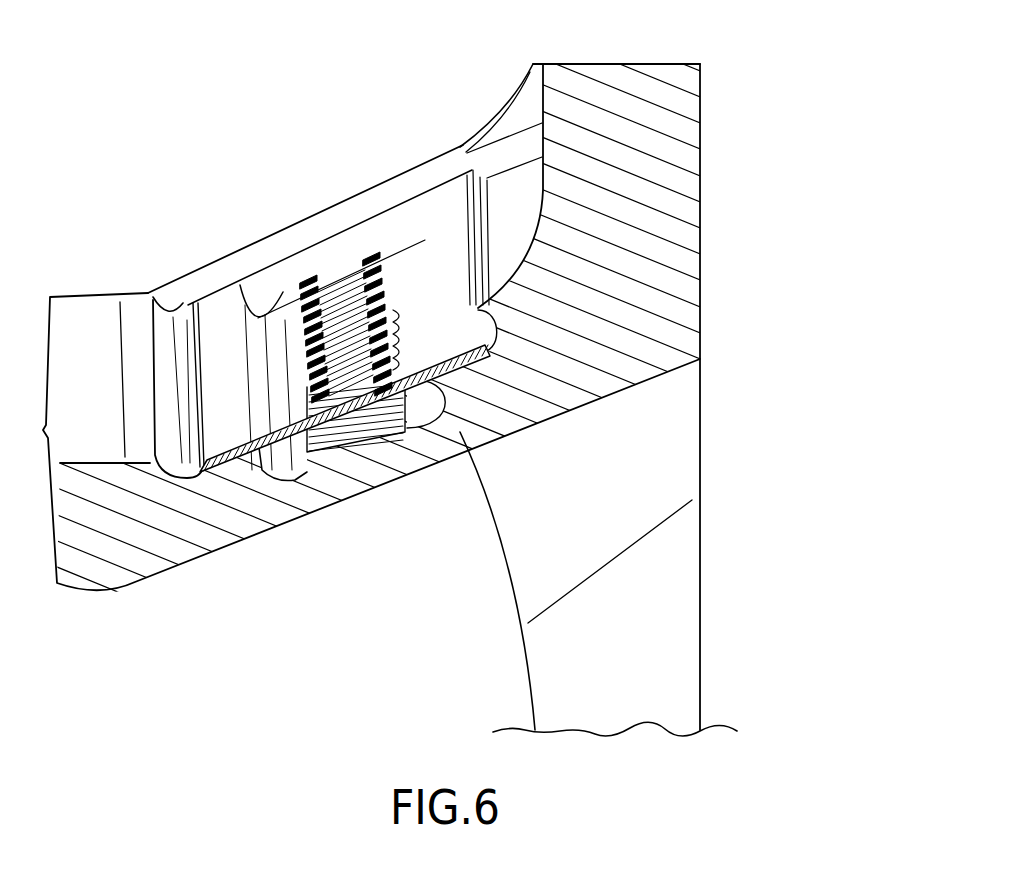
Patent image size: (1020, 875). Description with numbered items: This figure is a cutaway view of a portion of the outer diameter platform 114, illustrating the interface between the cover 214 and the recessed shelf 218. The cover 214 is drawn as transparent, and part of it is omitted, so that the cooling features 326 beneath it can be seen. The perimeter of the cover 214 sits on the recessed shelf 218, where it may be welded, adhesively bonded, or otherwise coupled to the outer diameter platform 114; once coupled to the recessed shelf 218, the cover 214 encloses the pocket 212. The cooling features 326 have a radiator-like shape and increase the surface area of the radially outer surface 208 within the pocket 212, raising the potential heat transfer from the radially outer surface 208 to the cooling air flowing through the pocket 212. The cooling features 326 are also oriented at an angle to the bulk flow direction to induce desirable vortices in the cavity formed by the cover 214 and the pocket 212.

The radially outer surface 208 is at (586, 110).
The outer diameter platform 114 is at (703, 255).
The cover 214 is at (258, 297).
The recessed shelf 218 is at (453, 237).
The pocket 212 is at (418, 420).
The cooling features 326 is at (323, 455).